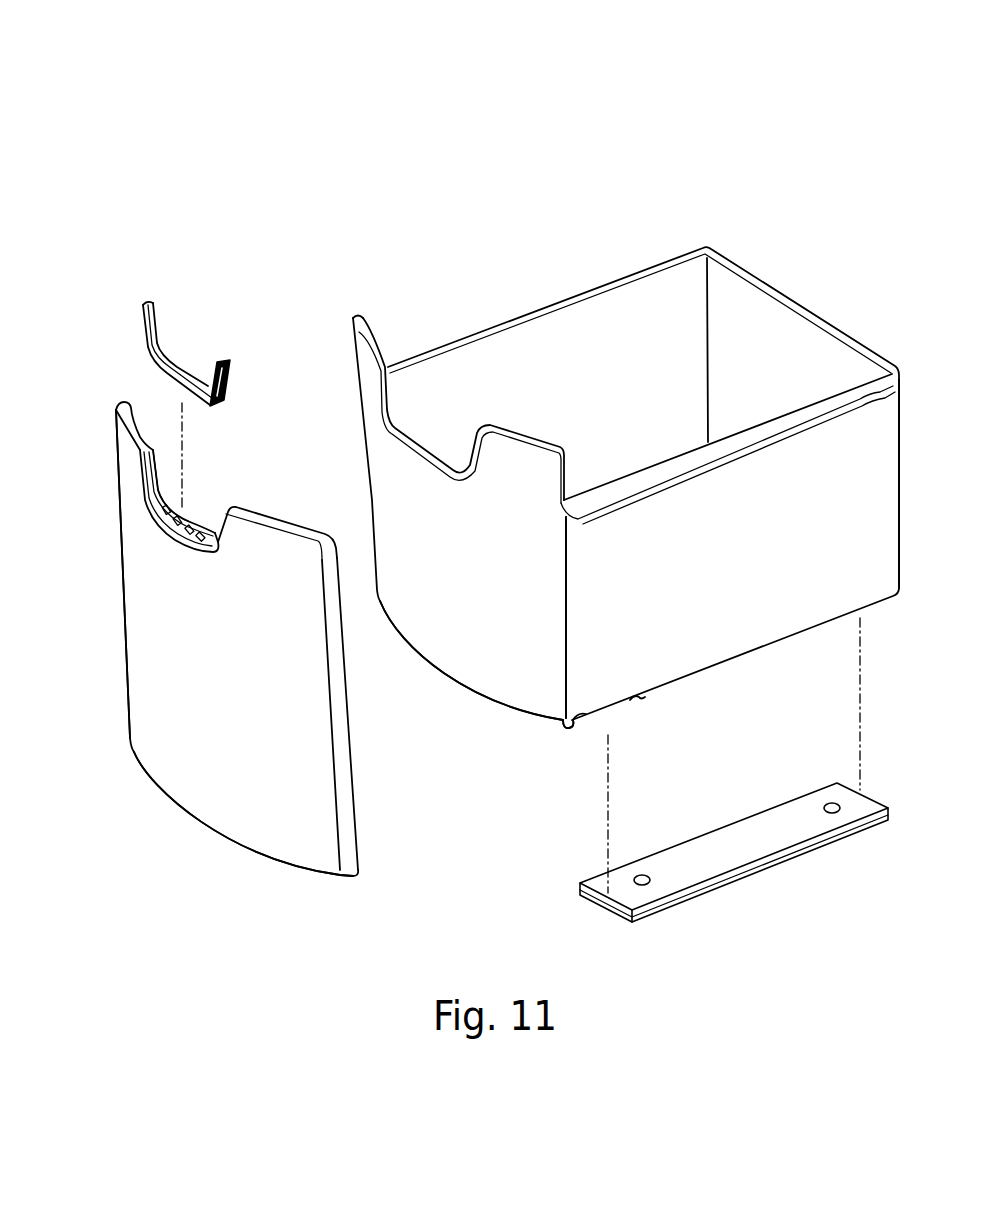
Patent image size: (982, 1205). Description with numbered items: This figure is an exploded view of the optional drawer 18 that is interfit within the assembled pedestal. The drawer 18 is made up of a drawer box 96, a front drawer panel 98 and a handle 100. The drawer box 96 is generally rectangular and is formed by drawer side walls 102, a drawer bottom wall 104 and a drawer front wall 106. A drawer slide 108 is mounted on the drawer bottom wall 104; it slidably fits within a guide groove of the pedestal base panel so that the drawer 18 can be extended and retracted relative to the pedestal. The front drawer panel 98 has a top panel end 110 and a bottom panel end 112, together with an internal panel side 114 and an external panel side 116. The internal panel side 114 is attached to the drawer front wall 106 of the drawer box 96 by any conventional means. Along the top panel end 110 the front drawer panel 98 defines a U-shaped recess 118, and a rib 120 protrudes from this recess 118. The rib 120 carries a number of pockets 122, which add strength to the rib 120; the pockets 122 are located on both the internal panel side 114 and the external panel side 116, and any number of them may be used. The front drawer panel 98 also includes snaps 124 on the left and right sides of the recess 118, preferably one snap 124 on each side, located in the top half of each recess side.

The drawer 18 is at (436, 138).
The drawer box 96 is at (740, 637).
The front drawer panel 98 is at (234, 806).
The handle 100 is at (180, 363).
The drawer side walls 102 is at (543, 360).
The drawer bottom wall 104 is at (607, 707).
The drawer front wall 106 is at (477, 643).
The drawer slide 108 is at (755, 850).
The top panel end 110 is at (273, 528).
The bottom panel end 112 is at (302, 874).
The internal panel side 114 is at (157, 470).
The external panel side 116 is at (130, 506).
The U-shaped recess 118 is at (165, 498).
The rib 120 is at (200, 512).
The pockets 122 is at (200, 546).
The snaps 124 is at (157, 470).